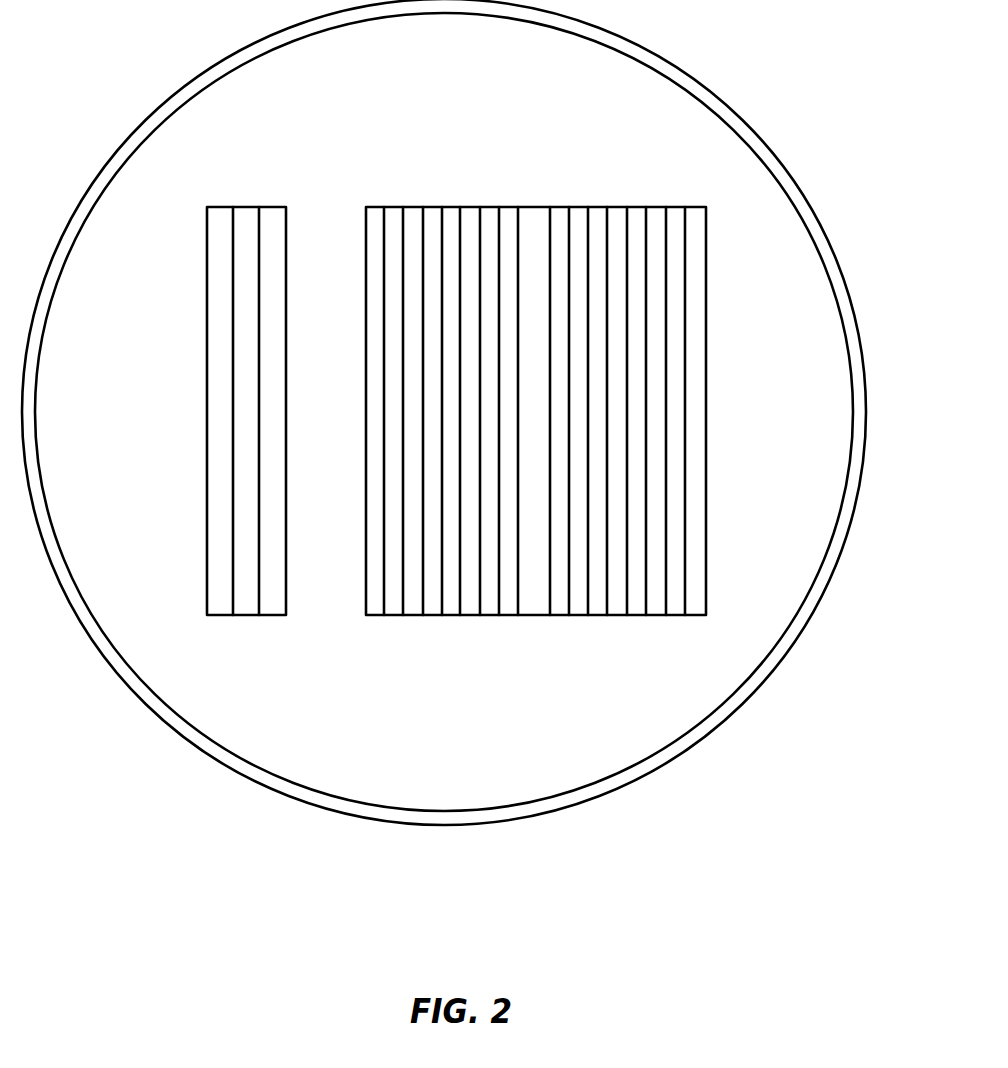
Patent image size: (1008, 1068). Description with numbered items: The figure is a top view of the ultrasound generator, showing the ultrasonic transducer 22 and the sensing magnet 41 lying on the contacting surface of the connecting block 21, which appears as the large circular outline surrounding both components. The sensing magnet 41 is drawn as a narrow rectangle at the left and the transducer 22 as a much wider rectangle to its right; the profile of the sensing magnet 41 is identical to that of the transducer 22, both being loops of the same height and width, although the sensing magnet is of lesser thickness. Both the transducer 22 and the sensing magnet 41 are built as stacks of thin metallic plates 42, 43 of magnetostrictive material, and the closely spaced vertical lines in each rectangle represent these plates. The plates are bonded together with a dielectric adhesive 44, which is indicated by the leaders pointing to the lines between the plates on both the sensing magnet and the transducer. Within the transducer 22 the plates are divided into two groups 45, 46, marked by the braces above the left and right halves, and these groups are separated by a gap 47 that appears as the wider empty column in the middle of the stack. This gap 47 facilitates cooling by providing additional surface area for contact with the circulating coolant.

The connecting block 21 is at (465, 84).
The ultrasonic transducer 22 is at (705, 652).
The sensing magnet 41 is at (205, 652).
The thin metallic plates 42 is at (692, 535).
The thin metallic plates 43 is at (277, 549).
The dielectric adhesive 44 is at (286, 447).
The first group of plates 45 is at (365, 176).
The second group of plates 46 is at (550, 176).
The gap 47 is at (536, 335).